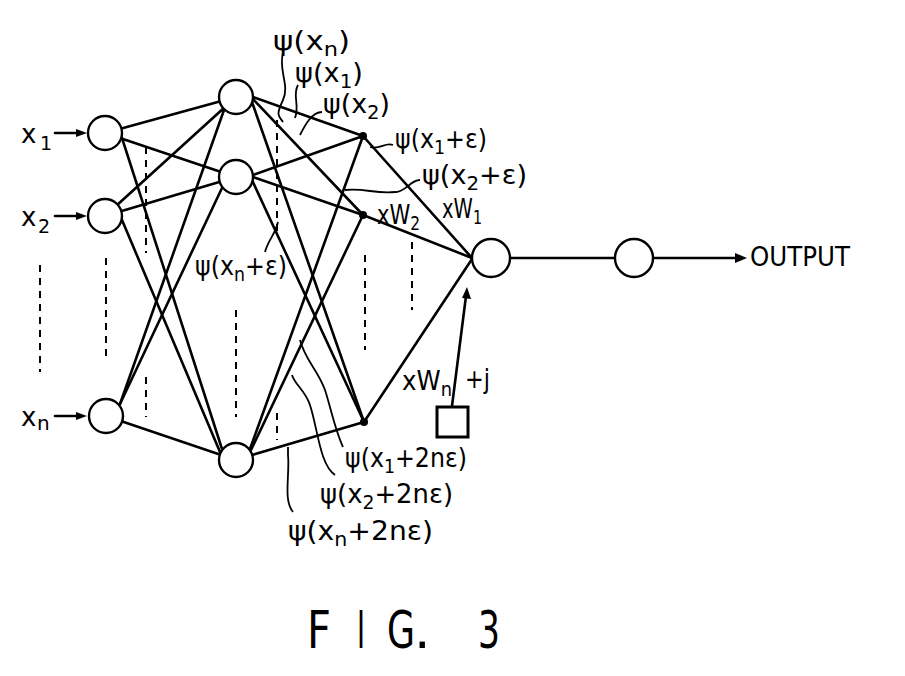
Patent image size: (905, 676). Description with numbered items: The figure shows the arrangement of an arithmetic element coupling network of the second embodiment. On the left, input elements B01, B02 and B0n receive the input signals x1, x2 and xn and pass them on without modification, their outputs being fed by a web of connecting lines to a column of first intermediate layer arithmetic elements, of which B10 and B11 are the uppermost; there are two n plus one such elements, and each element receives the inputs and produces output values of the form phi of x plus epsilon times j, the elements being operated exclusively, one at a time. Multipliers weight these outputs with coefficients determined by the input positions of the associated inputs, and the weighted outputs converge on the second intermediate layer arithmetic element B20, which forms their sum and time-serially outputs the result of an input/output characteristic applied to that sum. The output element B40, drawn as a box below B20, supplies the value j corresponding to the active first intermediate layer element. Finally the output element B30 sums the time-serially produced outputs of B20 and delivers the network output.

The input element B01 is at (105, 116).
The input element B02 is at (105, 199).
The input element B0n is at (106, 433).
The first intermediate layer arithmetic element B10 is at (236, 80).
The first intermediate layer arithmetic element B11 is at (236, 160).
The second intermediate layer arithmetic element B20 is at (497, 277).
The output element B30 is at (637, 277).
The output element B40 is at (469, 421).